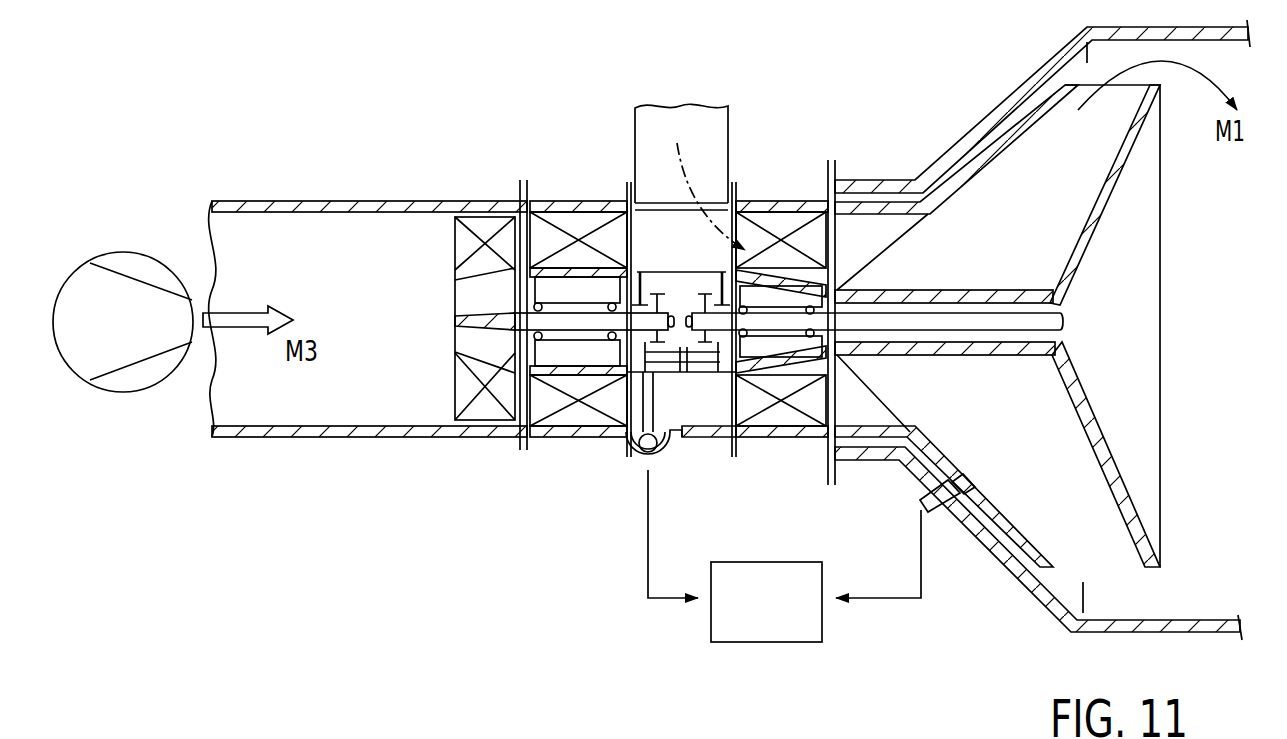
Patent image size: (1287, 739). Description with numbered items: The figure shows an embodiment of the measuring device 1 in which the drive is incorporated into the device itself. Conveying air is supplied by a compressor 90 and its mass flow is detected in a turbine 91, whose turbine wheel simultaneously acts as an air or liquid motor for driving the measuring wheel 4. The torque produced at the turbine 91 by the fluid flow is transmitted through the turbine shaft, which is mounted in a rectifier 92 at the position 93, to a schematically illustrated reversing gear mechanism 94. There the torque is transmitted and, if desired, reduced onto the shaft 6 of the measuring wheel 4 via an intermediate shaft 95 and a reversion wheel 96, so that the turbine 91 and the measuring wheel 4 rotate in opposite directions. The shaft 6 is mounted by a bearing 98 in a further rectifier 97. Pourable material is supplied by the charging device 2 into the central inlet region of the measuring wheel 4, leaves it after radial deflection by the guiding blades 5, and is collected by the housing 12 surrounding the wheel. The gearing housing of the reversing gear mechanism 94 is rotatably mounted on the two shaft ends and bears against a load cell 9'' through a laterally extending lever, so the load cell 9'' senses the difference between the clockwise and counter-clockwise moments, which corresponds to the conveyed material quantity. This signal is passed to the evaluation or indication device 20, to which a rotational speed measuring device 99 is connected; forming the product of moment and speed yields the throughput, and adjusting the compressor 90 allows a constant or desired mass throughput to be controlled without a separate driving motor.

The measuring device 1 is at (891, 170).
The charging device 2 is at (741, 157).
The measuring wheel 4 is at (953, 177).
The guiding blades 5 is at (1020, 177).
The shaft 6 is at (770, 313).
The load cell 9'' is at (650, 485).
The housing 12 is at (1036, 79).
The evaluation or indication device 20 is at (718, 644).
The compressor 90 is at (136, 393).
The turbine 91 is at (458, 346).
The rectifier 92 is at (544, 424).
The position 93 is at (600, 338).
The reversing gear mechanism 94 is at (660, 270).
The intermediate shaft 95 is at (627, 378).
The reversion wheel 96 is at (702, 428).
The further rectifier 97 is at (756, 428).
The bearing 98 is at (800, 338).
The rotational speed measuring device 99 is at (921, 500).